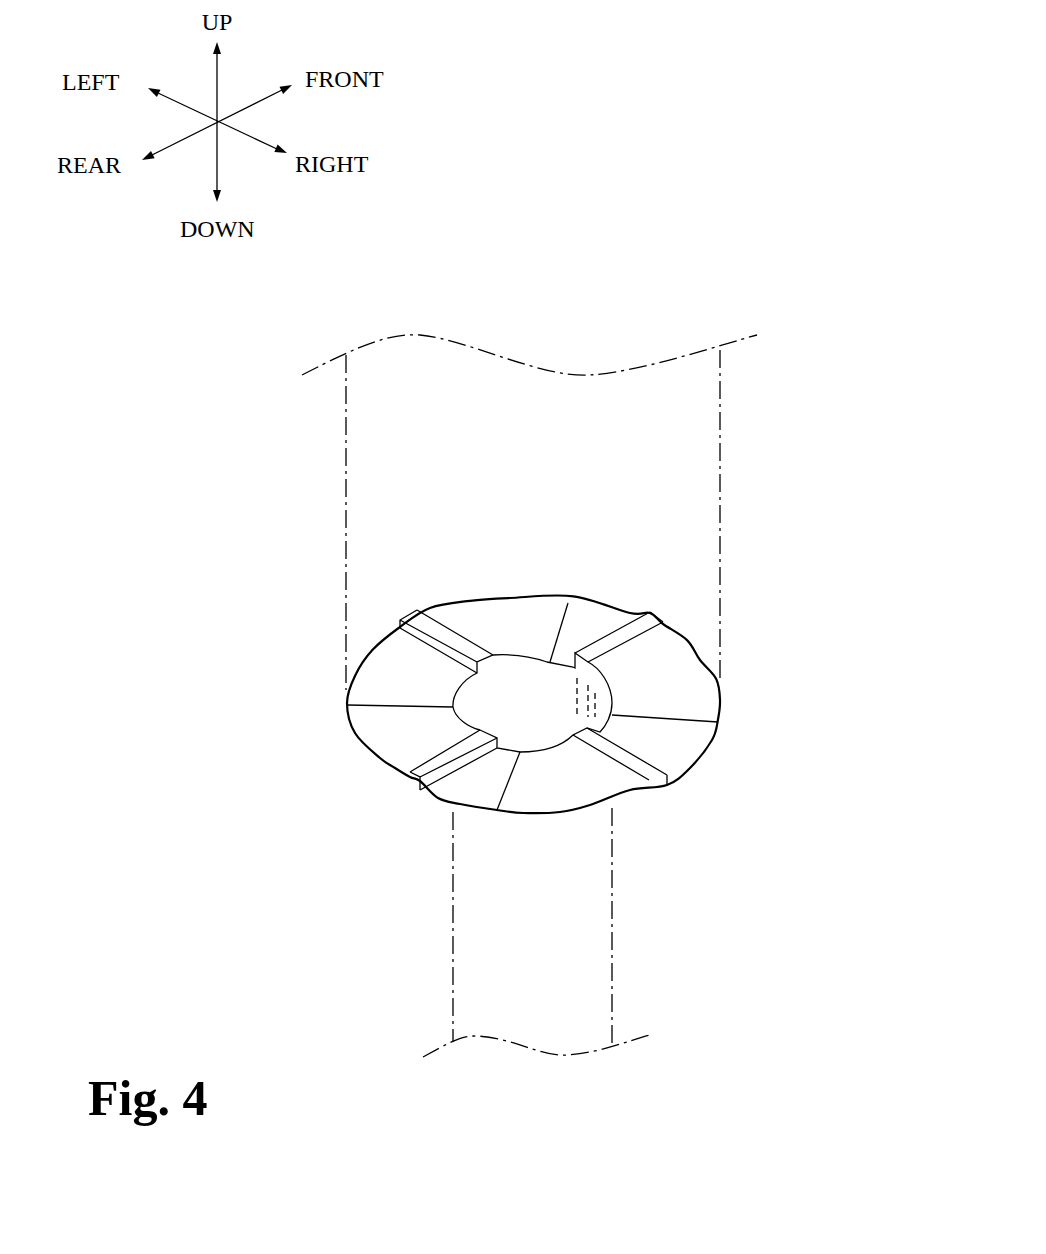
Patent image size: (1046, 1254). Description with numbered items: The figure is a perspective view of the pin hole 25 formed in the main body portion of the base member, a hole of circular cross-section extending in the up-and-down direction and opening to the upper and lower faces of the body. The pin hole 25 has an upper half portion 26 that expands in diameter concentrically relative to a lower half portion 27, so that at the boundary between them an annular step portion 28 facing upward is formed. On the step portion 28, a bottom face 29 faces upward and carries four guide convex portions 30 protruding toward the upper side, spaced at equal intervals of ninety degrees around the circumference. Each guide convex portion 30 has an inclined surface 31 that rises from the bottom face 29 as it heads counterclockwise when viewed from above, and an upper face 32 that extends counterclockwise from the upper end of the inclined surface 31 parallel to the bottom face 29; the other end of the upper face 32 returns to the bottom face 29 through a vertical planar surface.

The pin hole 25 is at (707, 409).
The upper half portion 26 is at (718, 477).
The lower half portion 27 is at (612, 872).
The annular step portion 28 is at (734, 730).
The bottom face 29 is at (578, 605).
The guide convex portion 30 is at (497, 589).
The inclined surface 31 is at (533, 611).
The upper face 32 is at (426, 612).